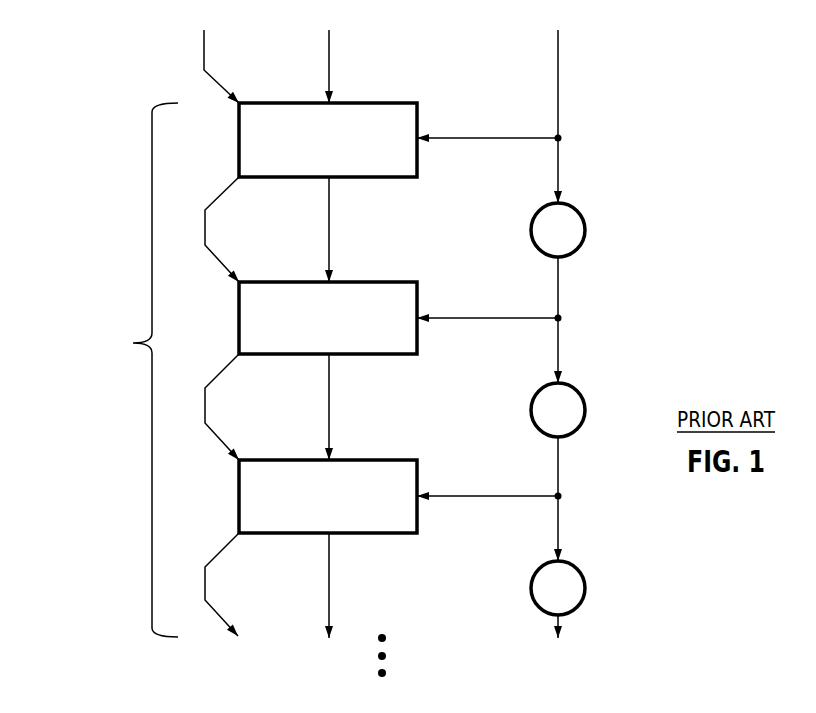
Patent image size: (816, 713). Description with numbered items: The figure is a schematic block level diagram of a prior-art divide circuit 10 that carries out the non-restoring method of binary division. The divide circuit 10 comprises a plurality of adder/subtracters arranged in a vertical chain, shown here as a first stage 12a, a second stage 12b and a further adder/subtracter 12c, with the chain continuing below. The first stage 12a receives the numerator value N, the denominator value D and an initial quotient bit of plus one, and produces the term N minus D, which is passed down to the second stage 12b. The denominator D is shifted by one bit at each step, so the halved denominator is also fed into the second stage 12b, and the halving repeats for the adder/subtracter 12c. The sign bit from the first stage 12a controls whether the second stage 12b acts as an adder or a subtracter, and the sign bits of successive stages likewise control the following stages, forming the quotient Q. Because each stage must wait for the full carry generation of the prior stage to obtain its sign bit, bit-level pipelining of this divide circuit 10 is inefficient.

The divide circuit 10 is at (64, 291).
The first stage 12a is at (397, 112).
The second stage 12b is at (397, 290).
The adder/subtracter 12c is at (397, 468).